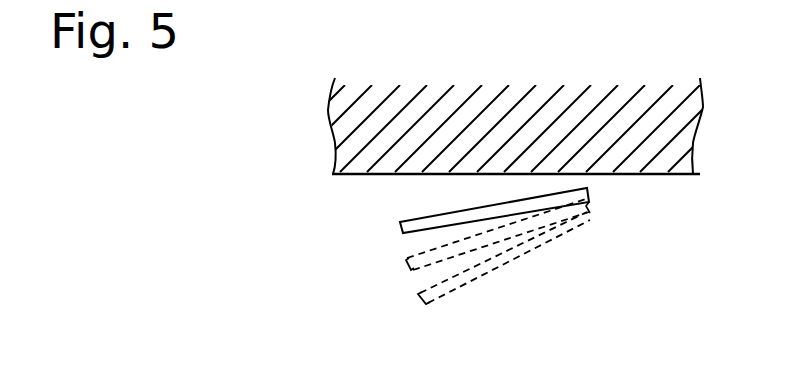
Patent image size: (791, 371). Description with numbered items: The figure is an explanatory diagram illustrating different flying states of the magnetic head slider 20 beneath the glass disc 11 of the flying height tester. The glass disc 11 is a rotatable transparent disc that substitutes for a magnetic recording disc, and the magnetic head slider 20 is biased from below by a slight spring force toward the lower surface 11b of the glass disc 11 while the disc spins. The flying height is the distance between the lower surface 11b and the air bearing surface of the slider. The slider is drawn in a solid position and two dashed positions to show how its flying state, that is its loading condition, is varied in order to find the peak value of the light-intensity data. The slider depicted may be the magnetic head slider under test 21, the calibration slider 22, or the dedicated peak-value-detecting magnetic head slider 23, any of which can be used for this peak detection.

The glass disc 11 is at (350, 128).
The lower surface of the glass disc 11b is at (363, 176).
The magnetic head slider 20 is at (377, 246).
The magnetic head slider under test 21 is at (377, 244).
The calibration slider 22 is at (410, 250).
The peak-value-detecting magnetic head slider 23 is at (420, 300).